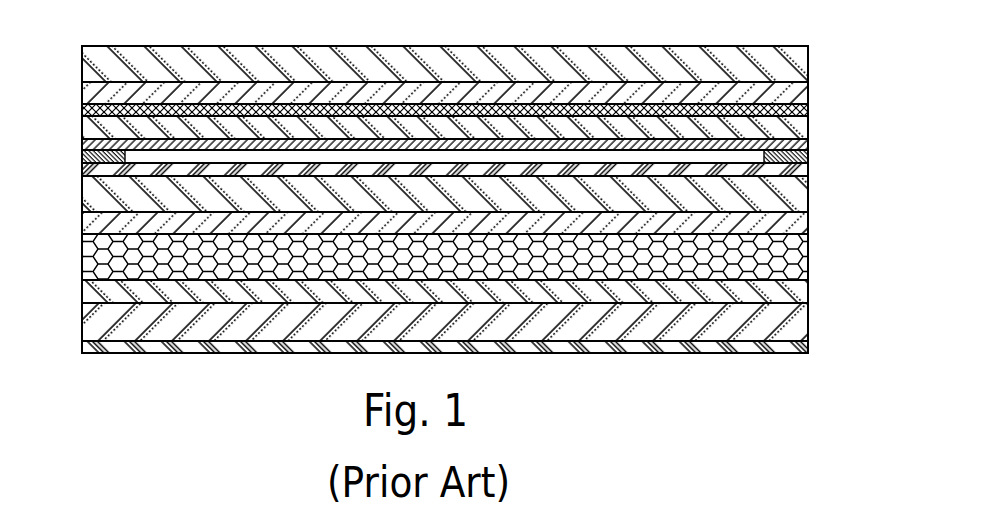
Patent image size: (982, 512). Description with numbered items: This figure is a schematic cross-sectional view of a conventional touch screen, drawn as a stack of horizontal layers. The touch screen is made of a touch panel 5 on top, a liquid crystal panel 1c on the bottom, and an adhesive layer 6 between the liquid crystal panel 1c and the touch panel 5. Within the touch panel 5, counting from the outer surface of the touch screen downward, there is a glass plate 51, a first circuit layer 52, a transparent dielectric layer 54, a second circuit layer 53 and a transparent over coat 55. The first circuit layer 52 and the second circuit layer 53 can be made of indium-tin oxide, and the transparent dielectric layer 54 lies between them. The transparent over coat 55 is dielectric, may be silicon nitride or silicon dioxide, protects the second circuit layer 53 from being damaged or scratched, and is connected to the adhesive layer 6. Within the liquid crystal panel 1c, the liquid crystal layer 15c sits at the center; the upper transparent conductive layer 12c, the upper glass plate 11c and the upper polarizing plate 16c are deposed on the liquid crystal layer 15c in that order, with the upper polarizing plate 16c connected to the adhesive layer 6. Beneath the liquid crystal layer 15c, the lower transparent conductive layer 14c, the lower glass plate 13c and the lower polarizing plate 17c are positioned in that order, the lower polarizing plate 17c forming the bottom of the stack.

The liquid crystal panel 1c is at (68, 163).
The touch panel 5 is at (68, 46).
The adhesive layer 6 is at (84, 156).
The glass plate 51 is at (782, 67).
The first circuit layer 52 is at (780, 97).
The second circuit layer 53 is at (790, 129).
The transparent dielectric layer 54 is at (785, 111).
The transparent over coat 55 is at (790, 147).
The upper glass plate 11c is at (780, 197).
The upper transparent conductive layer 12c is at (780, 225).
The lower glass plate 13c is at (775, 325).
The lower transparent conductive layer 14c is at (790, 293).
The liquid crystal layer 15c is at (785, 258).
The upper polarizing plate 16c is at (790, 170).
The lower polarizing plate 17c is at (790, 345).